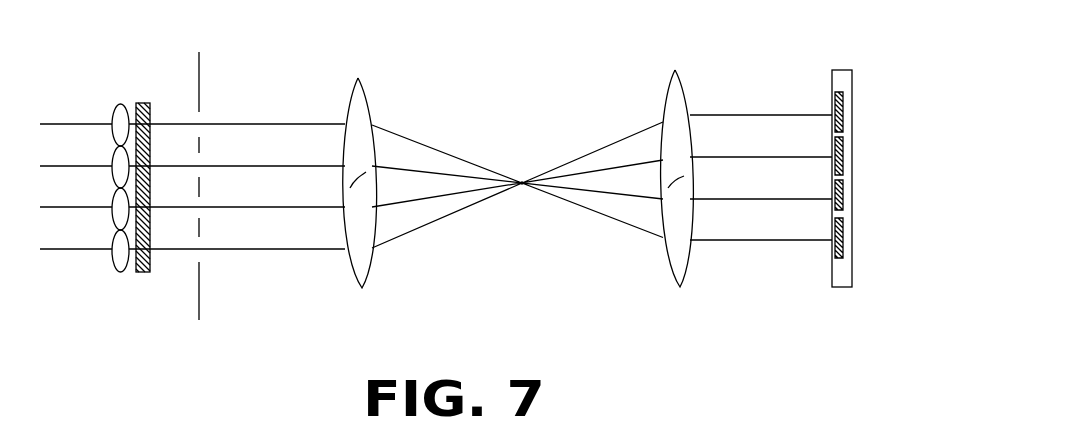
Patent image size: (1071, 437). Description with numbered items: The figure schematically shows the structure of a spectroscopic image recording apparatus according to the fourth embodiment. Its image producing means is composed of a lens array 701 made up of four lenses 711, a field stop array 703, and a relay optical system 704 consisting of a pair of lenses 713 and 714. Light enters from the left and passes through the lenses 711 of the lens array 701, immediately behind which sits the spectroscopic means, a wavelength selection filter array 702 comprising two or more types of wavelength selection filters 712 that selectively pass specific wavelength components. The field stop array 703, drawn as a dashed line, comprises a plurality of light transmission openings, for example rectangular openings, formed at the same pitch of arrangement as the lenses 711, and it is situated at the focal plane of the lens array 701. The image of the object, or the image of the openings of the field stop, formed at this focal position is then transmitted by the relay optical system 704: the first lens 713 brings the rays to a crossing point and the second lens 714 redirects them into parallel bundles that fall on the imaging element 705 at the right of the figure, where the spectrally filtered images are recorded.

The lens array 701 is at (112, 108).
The wavelength selection filter array 702 is at (141, 102).
The field stop array 703 is at (199, 52).
The relay optical system 704 is at (505, 95).
The imaging element 705 is at (835, 70).
The lens 711 is at (115, 268).
The wavelength selection filter 712 is at (143, 275).
The lens 713 is at (362, 290).
The lens 714 is at (682, 290).